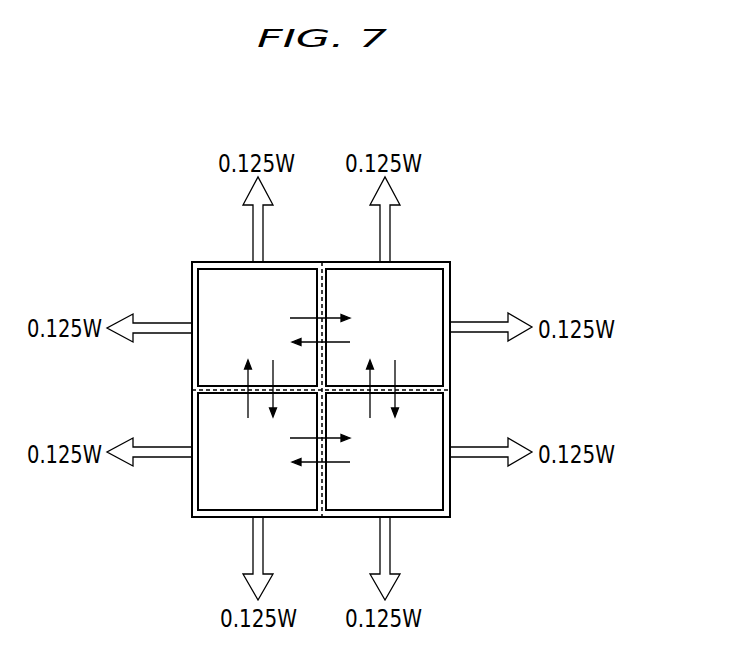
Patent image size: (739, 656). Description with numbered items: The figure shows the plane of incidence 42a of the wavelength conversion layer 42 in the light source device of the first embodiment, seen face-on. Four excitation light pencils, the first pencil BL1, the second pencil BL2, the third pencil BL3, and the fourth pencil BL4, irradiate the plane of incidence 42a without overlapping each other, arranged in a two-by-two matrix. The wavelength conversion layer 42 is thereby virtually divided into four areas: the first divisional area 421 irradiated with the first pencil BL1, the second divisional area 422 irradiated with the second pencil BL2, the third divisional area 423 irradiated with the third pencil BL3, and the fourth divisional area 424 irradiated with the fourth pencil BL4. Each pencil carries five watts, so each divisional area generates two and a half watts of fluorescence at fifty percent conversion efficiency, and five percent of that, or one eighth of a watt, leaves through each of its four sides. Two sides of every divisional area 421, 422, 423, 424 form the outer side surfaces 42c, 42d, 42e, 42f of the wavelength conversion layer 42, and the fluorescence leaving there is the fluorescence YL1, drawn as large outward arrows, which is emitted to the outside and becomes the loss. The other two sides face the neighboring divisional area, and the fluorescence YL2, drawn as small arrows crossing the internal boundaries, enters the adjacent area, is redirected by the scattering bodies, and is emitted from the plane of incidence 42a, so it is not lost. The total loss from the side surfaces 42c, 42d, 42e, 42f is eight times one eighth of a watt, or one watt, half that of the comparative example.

The wavelength conversion layer 42 is at (318, 160).
The plane of incidence 42a is at (450, 472).
The side surface 42c is at (333, 262).
The side surface 42d is at (333, 518).
The side surface 42e is at (192, 387).
The side surface 42f is at (450, 386).
The first divisional area 421 is at (212, 422).
The second divisional area 422 is at (437, 362).
The third divisional area 423 is at (437, 422).
The fourth divisional area 424 is at (212, 360).
The first pencil BL1 is at (217, 515).
The second pencil BL2 is at (427, 267).
The third pencil BL3 is at (427, 515).
The fourth pencil BL4 is at (217, 267).
The fluorescence emitted to the outside YL1 is at (263, 233).
The fluorescence entering adjacent divisional area YL2 is at (310, 315).